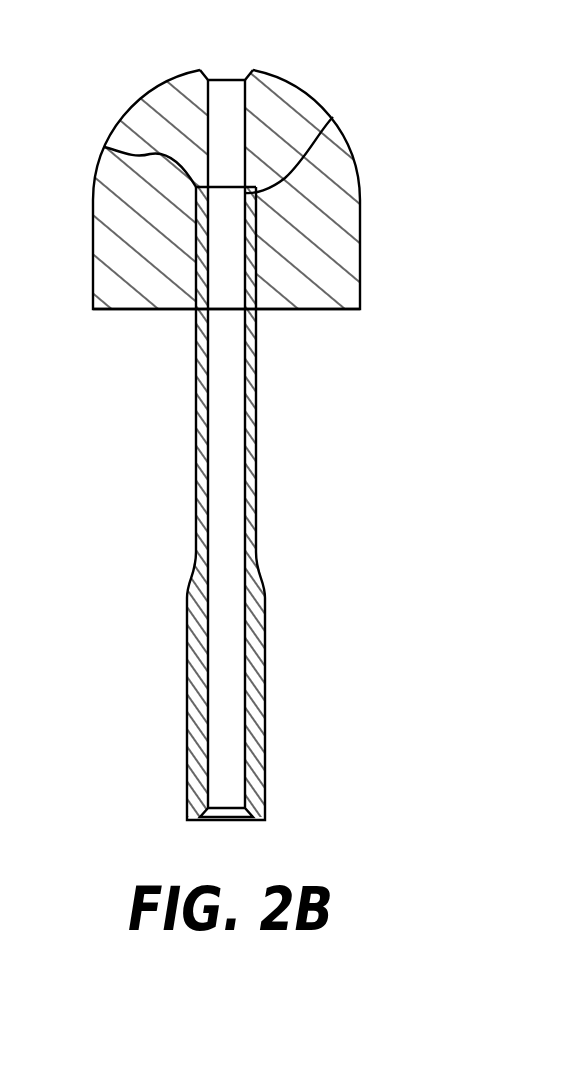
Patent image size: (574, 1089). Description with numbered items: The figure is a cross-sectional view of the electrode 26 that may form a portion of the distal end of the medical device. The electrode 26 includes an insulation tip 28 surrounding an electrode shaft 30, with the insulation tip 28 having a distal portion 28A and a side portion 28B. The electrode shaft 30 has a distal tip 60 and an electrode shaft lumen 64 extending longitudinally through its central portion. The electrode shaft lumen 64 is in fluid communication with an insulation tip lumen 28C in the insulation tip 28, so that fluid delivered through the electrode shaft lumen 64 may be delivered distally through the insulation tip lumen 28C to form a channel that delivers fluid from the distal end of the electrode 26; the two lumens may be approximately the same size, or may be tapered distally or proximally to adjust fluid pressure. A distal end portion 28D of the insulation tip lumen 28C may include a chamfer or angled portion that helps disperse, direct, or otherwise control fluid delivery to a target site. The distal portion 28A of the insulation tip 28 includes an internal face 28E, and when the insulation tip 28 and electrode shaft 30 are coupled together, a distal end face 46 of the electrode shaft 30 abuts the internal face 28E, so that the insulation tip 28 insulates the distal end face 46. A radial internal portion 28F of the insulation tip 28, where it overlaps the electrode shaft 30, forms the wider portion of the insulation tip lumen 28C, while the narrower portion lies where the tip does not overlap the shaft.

The electrode 26 is at (250, 416).
The insulation tip 28 is at (246, 178).
The distal portion 28A is at (313, 93).
The side portion 28B is at (360, 287).
The insulation tip lumen 28C is at (218, 95).
The distal end portion 28D is at (222, 82).
The internal face 28E is at (104, 147).
The radial internal portion 28F is at (257, 275).
The distal end face 46 is at (333, 117).
The electrode shaft 30 is at (261, 503).
The distal tip 60 is at (196, 250).
The electrode shaft lumen 64 is at (247, 752).